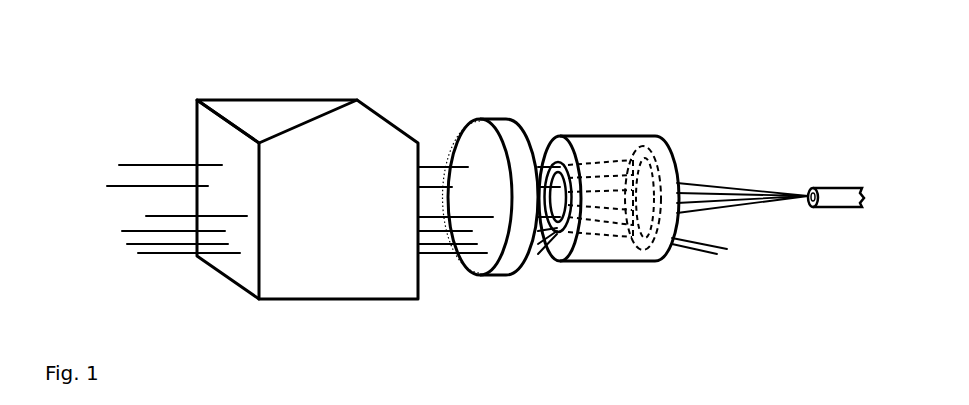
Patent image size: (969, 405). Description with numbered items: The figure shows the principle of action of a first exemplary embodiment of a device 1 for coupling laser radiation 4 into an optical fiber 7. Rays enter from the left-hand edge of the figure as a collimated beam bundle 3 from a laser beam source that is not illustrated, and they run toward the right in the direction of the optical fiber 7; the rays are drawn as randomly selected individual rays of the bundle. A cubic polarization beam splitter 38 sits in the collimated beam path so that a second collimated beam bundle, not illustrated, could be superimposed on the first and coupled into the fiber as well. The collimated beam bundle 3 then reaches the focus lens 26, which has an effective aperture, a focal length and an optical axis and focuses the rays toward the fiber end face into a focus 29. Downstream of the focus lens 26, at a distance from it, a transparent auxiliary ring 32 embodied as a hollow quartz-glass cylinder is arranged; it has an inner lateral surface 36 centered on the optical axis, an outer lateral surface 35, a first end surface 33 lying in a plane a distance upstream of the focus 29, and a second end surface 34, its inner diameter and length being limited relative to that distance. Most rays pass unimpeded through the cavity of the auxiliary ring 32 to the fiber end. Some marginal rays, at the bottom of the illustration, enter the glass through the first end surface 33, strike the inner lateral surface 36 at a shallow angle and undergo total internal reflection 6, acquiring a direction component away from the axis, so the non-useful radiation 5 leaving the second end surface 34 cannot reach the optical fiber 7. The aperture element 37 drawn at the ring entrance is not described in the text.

The device 1 is at (844, 88).
The collimated beam bundle 3 is at (440, 258).
The laser radiation 4 is at (753, 210).
The non-useful radiation 5 is at (700, 252).
The total internal reflection 6 is at (592, 240).
The optical fiber 7 is at (820, 188).
The focus lens 26 is at (482, 119).
The focus 29 is at (808, 195).
The auxiliary ring 32 is at (597, 146).
The first end surface 33 is at (558, 253).
The second end surface 34 is at (658, 148).
The outer lateral surface 35 is at (638, 138).
The inner lateral surface 36 is at (623, 163).
The aperture 37 is at (553, 162).
The cubic polarization beam splitter 38 is at (286, 109).